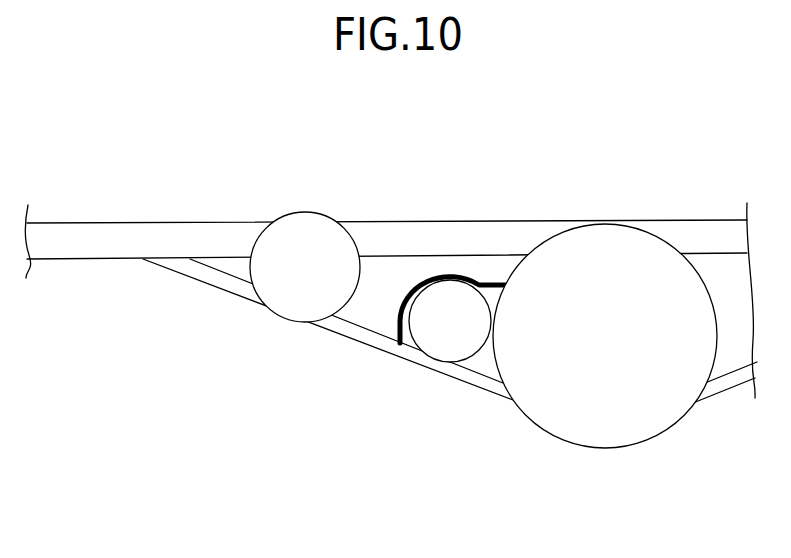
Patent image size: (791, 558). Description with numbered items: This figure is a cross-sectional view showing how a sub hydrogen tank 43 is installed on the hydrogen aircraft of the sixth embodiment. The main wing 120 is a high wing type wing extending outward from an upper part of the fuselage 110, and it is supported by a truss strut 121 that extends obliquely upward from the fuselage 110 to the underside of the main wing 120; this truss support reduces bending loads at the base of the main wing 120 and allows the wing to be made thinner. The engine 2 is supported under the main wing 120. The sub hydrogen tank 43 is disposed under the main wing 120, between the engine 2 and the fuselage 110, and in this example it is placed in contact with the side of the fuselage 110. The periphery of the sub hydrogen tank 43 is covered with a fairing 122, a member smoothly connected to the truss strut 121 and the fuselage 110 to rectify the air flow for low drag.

The engine 2 is at (303, 225).
The main wing 120 is at (428, 233).
The truss strut 121 is at (343, 329).
The fairing 122 is at (478, 281).
The sub hydrogen tank 43 is at (443, 345).
The fuselage 110 is at (602, 423).